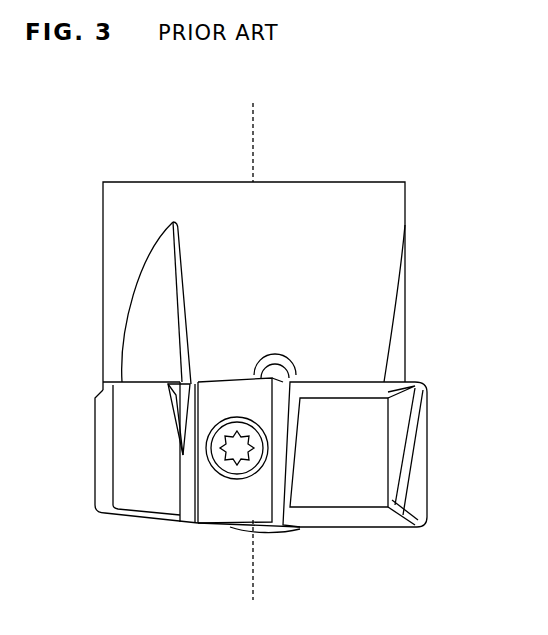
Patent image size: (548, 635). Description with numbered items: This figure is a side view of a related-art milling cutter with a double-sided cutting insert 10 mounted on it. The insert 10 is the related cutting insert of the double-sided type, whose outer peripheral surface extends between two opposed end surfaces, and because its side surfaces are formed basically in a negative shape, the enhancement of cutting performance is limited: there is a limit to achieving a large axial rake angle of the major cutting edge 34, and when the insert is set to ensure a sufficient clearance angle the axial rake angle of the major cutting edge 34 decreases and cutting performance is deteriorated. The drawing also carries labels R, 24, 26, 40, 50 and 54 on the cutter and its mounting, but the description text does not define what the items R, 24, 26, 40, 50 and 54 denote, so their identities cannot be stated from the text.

The rotation axis R is at (254, 114).
The double-sided cutting insert 10 is at (257, 503).
The clamping screw 24 is at (231, 466).
The prior art cutting tool body 26 is at (386, 136).
The major cutting edge 34 is at (183, 480).
The support wedge 40 is at (177, 527).
The clamping bar 50 is at (193, 467).
The shank with cutting blades 54 is at (353, 293).